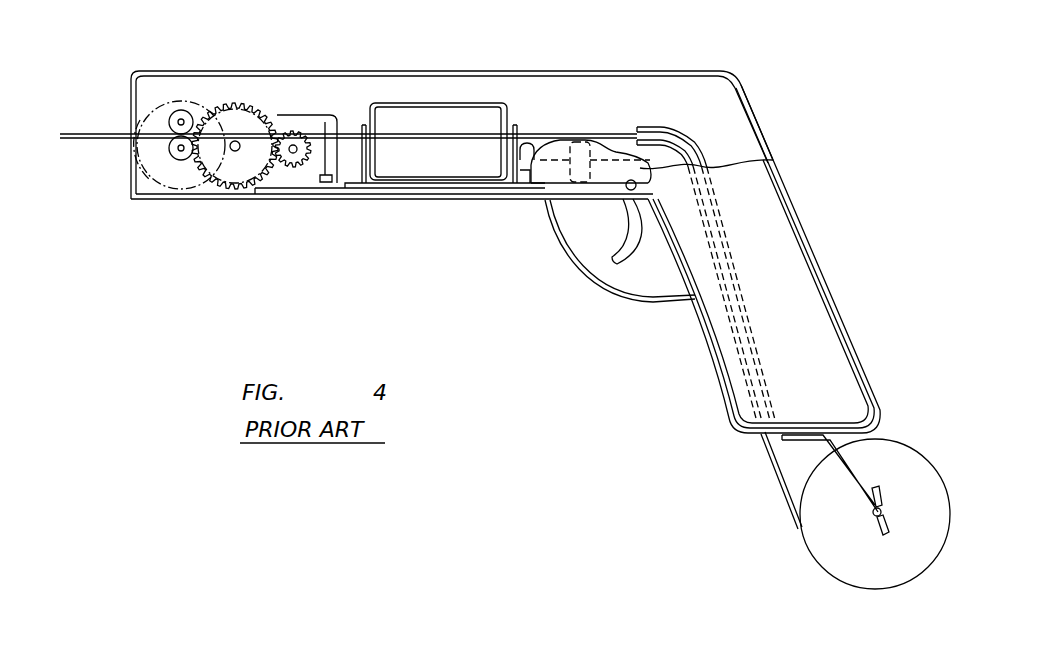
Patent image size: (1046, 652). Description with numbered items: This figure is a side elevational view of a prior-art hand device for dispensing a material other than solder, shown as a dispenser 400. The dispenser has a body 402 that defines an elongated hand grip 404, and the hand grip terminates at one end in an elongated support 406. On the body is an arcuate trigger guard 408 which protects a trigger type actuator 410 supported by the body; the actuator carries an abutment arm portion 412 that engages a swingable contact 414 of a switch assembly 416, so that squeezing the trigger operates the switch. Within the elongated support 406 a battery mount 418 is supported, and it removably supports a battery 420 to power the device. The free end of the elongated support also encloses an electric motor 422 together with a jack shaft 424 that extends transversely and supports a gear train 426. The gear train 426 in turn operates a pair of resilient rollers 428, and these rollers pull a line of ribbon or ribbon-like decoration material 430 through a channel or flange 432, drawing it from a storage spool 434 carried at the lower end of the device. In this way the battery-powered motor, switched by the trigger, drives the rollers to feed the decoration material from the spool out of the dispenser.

The dispenser 400 is at (482, 422).
The body 402 is at (351, 70).
The elongated hand grip 404 is at (810, 254).
The elongated support 406 is at (541, 190).
The arcuate trigger guard 408 is at (655, 303).
The trigger type actuator 410 is at (600, 258).
The abutment arm portion 412 is at (663, 163).
The swingable contact 414 is at (590, 145).
The switch assembly 416 is at (567, 140).
The battery mount 418 is at (403, 190).
The battery 420 is at (503, 112).
The electric motor 422 is at (313, 174).
The jack shaft 424 is at (292, 168).
The gear train 426 is at (242, 112).
The resilient rollers 428 is at (182, 110).
The ribbon-like decoration material 430 is at (800, 500).
The channel or flange 432 is at (745, 380).
The storage spool 434 is at (833, 565).